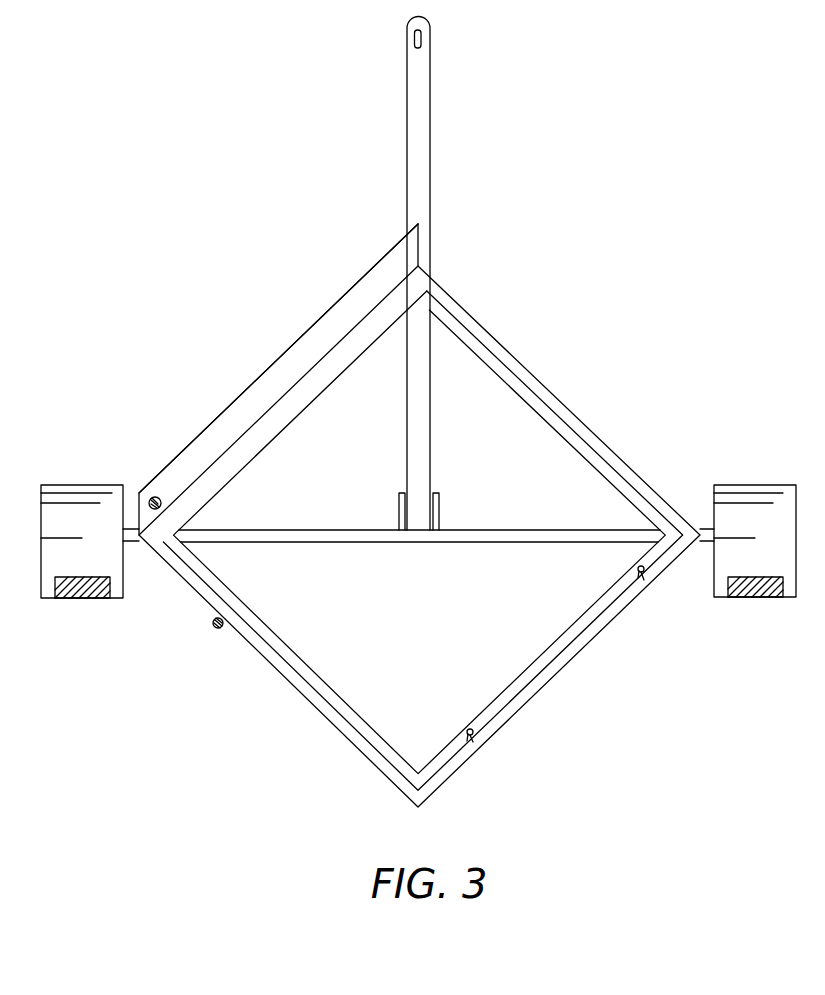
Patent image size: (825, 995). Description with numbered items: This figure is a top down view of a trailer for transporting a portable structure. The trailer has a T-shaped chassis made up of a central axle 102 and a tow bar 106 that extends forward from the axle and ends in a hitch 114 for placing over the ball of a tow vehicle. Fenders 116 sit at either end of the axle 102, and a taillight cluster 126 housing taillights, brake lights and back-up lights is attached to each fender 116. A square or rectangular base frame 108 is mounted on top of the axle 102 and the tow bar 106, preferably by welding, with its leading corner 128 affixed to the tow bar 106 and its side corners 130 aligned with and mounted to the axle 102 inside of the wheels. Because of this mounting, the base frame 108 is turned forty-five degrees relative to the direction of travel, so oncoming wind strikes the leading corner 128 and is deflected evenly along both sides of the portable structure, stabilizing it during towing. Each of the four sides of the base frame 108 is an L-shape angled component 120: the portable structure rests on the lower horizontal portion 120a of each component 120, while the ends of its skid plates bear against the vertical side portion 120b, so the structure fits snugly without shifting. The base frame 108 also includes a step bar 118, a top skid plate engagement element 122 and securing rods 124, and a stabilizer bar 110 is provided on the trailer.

The central axle 102 is at (435, 543).
The tow bar 106 is at (430, 127).
The base frame 108 is at (419, 536).
The stabilizer bar 110 is at (218, 628).
The hitch 114 is at (425, 36).
The fenders 116 is at (70, 484).
The step bar 118 is at (233, 405).
The L-shape angled component 120 is at (555, 438).
The lower horizontal portion 120a is at (502, 372).
The vertical side portion 120b is at (503, 352).
The top skid plate engagement element 122 is at (365, 317).
The securing rods 124 is at (641, 574).
The taillight cluster 126 is at (80, 598).
The leading corner 128 is at (424, 267).
The side corners 130 is at (703, 528).